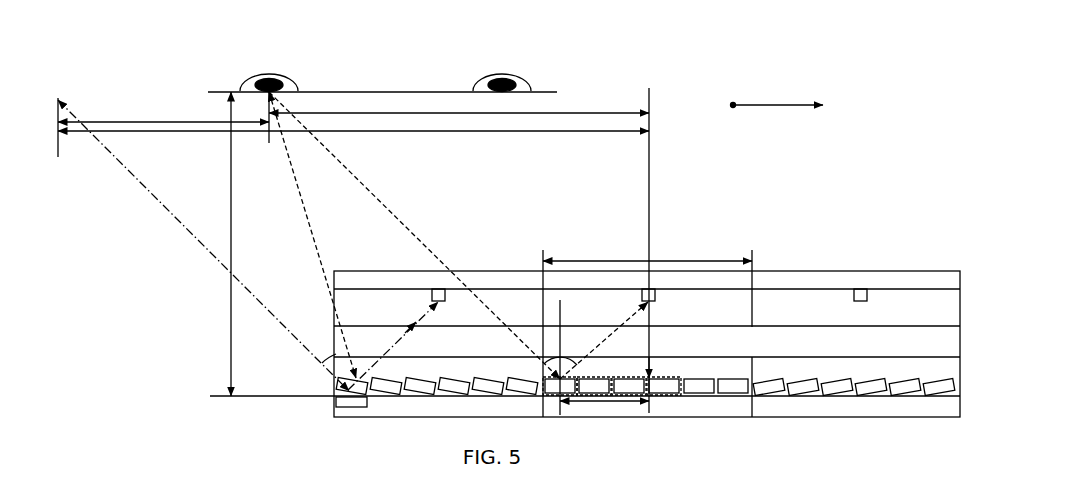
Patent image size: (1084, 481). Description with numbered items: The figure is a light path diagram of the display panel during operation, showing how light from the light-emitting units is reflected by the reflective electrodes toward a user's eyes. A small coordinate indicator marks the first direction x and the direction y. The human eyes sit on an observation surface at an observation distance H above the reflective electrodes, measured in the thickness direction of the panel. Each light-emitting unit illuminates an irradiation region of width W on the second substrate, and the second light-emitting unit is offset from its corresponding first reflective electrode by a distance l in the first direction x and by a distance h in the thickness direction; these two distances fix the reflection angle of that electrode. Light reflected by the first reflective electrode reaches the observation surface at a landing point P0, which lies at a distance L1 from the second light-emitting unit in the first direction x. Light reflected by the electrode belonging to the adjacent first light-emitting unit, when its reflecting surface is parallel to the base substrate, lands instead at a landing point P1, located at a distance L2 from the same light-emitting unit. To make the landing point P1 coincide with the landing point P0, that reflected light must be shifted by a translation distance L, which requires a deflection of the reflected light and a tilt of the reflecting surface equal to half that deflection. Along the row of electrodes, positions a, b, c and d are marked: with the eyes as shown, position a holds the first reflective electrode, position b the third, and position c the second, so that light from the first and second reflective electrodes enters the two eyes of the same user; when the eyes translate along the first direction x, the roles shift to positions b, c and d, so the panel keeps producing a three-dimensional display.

The landing point P0 is at (269, 64).
The landing point P1 is at (51, 119).
The translation distance L is at (163, 113).
The distance L1 is at (459, 104).
The distance L2 is at (353, 122).
The observation distance H is at (220, 244).
The thickness-direction distance h is at (656, 250).
The irradiation region width W is at (647, 331).
The first-direction distance l is at (604, 408).
The reflective electrode position a is at (570, 378).
The reflective electrode position b is at (600, 378).
The reflective electrode position c is at (631, 378).
The reflective electrode position d is at (667, 377).
The first direction x is at (783, 106).
The second direction y is at (725, 105).